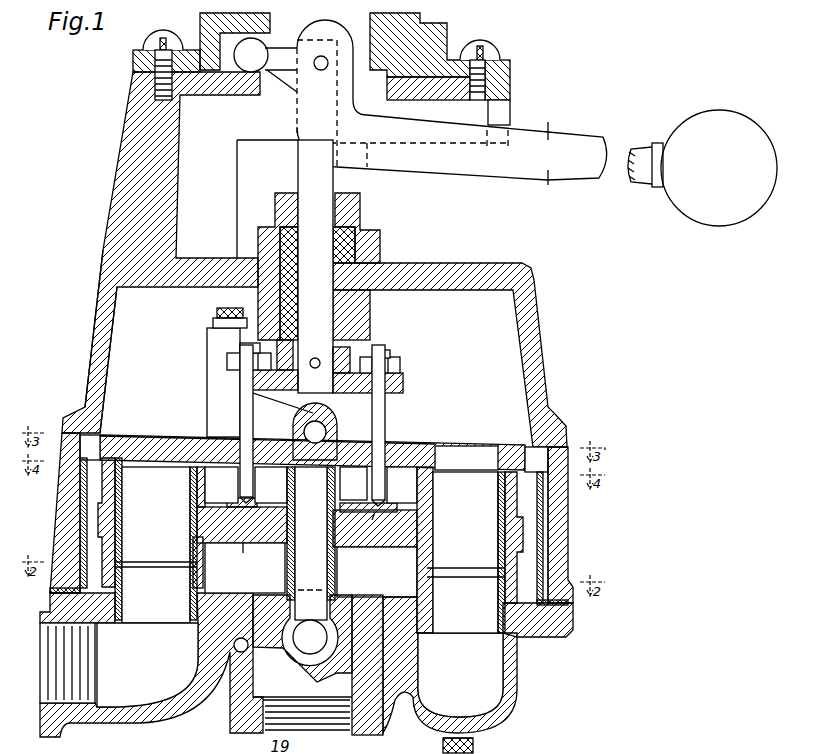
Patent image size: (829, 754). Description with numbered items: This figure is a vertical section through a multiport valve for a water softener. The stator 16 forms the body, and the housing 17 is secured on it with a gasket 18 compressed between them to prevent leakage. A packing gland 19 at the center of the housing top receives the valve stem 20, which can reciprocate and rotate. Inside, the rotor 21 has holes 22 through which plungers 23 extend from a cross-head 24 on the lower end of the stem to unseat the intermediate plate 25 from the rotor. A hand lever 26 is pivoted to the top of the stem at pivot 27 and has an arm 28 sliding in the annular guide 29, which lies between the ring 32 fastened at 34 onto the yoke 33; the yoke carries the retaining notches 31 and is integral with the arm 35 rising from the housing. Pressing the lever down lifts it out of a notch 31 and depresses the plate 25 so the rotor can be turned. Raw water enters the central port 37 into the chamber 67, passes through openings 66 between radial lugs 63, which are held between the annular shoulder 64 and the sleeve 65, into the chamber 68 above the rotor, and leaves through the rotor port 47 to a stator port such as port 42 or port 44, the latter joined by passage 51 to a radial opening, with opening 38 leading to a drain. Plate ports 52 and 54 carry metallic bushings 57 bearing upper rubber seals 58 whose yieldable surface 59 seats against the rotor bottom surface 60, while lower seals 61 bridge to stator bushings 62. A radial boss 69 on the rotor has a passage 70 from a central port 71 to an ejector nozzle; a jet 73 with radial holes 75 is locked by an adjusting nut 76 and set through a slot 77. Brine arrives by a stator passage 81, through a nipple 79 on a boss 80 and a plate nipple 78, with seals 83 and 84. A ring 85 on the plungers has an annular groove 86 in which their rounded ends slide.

The stator 16 is at (571, 623).
The housing 17 is at (551, 514).
The gasket 18 is at (565, 603).
The packing gland 19 is at (381, 263).
The valve stem 20 is at (305, 167).
The rotor 21 is at (128, 442).
The holes 22 is at (230, 442).
The plungers 23 is at (384, 425).
The cross-head 24 is at (347, 412).
The intermediate plate 25 is at (245, 568).
The hand lever 26 is at (468, 174).
The pivot 27 is at (325, 58).
The arm 28 is at (268, 50).
The annular guide 29 is at (410, 47).
The retaining notch 31 is at (510, 118).
The ring 32 is at (449, 33).
The yoke 33 is at (512, 89).
The fastening 34 is at (492, 52).
The arm 35 is at (176, 200).
The central port 37 is at (364, 603).
The radial threaded opening 38 is at (53, 673).
The stator port 42 is at (137, 614).
The stator port 44 is at (468, 647).
The rotor port 47 is at (448, 450).
The passage 51 is at (487, 698).
The plate port 52 is at (156, 545).
The plate port 54 is at (456, 539).
The metallic bushing 57 is at (205, 528).
The tubular rubber seal 58 is at (206, 502).
The seating and sealing surface 59 is at (108, 467).
The bottom surface 60 is at (170, 446).
The tubular rubber seal 61 is at (199, 588).
The metallic bushing 62 is at (100, 583).
The radial lugs 63 is at (532, 473).
The annular shoulder 64 is at (554, 423).
The sleeve 65 is at (545, 548).
The openings 66 is at (97, 438).
The chamber 67 is at (88, 527).
The chamber 68 is at (123, 338).
The radial boss 69 is at (208, 360).
The passage 70 is at (306, 430).
The central port 71 is at (269, 498).
The jet 73 is at (223, 307).
The radial holes 75 is at (477, 748).
The adjusting nut 76 is at (210, 324).
The slot 77 is at (443, 741).
The nipple 78 is at (243, 538).
The nipple 79 is at (318, 588).
The boss 80 is at (321, 648).
The passage 81 is at (302, 686).
The tubular rubber seal 83 is at (343, 556).
The tubular rubber seal 84 is at (341, 496).
The ring 85 is at (397, 503).
The annular groove 86 is at (375, 516).